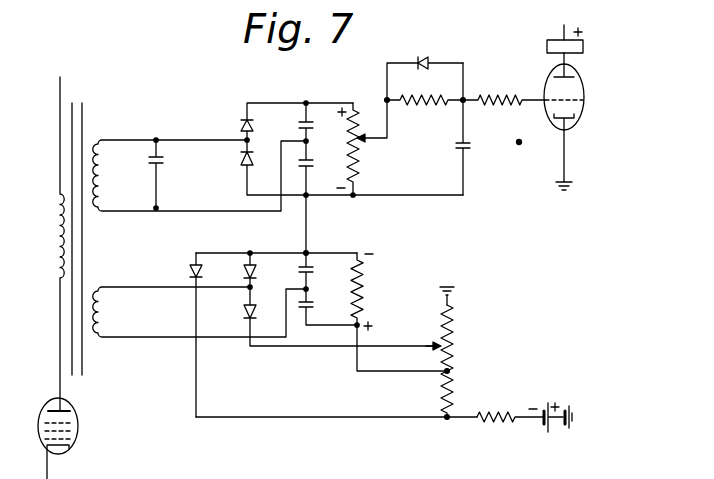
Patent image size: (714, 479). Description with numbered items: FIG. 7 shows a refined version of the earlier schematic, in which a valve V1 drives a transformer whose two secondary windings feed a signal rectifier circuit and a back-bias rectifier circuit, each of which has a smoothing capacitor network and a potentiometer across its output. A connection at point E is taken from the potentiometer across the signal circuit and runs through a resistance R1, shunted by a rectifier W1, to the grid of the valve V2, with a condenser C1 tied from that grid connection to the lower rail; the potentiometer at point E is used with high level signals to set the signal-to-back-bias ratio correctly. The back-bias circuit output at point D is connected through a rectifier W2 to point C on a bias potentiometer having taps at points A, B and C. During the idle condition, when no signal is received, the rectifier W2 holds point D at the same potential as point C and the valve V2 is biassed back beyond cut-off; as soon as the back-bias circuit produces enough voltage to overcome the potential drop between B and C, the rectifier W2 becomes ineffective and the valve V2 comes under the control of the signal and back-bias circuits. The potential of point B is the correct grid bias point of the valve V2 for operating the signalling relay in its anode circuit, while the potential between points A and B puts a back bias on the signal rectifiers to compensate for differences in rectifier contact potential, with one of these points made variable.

The rectifier W1 is at (425, 69).
The rectifier W2 is at (183, 335).
The resistance R1 is at (425, 112).
The condenser C1 is at (474, 129).
The valve V1 is at (68, 438).
The valve V2 is at (575, 107).
The point E is at (379, 91).
The point D is at (313, 246).
The point A is at (429, 339).
The point B is at (455, 374).
The point C is at (447, 426).